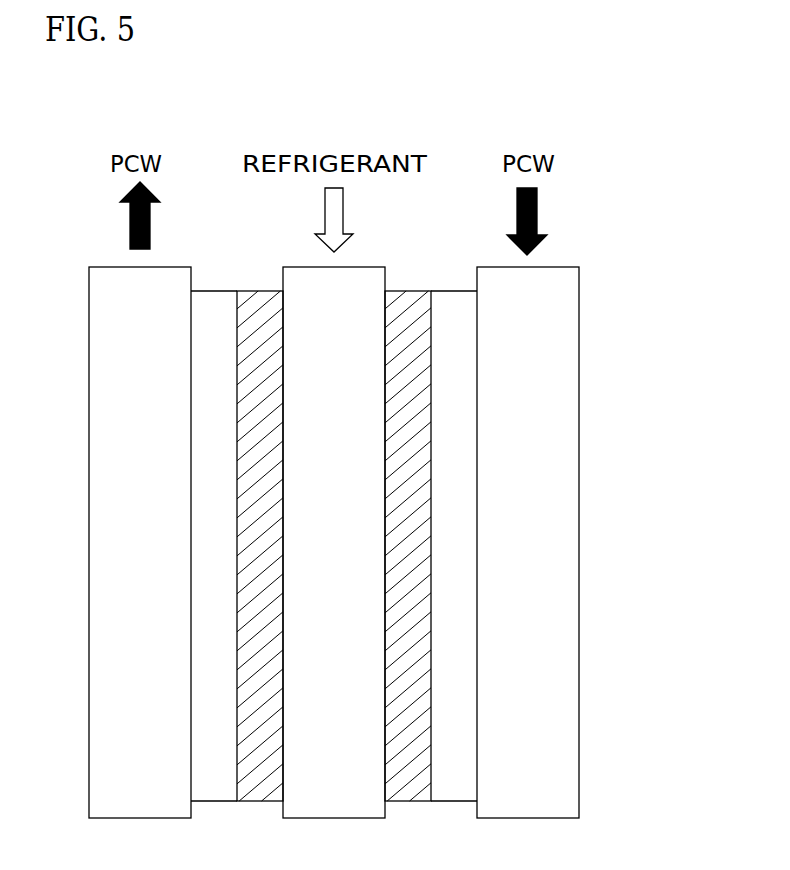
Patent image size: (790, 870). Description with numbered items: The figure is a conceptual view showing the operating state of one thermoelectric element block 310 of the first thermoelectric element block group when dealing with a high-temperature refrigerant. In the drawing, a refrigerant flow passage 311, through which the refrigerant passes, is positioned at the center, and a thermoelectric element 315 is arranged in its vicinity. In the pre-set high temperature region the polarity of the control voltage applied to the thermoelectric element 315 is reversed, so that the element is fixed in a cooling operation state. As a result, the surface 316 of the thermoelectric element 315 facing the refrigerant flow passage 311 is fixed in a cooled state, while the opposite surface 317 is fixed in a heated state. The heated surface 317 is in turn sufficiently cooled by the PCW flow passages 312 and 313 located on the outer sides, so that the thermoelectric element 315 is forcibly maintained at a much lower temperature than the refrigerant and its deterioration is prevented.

The thermoelectric element block 310 is at (393, 568).
The refrigerant flow passage 311 is at (330, 818).
The PCW flow passage 312 is at (137, 818).
The PCW flow passage 313 is at (527, 818).
The thermoelectric element 315 is at (232, 801).
The surface 316 is at (465, 588).
The opposite surface 317 is at (422, 452).